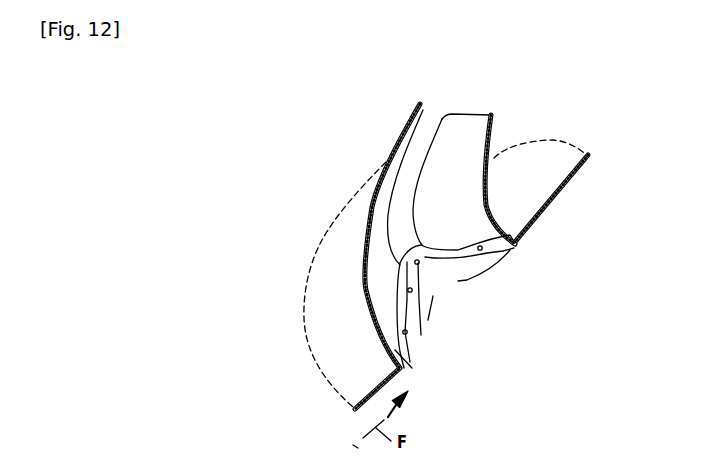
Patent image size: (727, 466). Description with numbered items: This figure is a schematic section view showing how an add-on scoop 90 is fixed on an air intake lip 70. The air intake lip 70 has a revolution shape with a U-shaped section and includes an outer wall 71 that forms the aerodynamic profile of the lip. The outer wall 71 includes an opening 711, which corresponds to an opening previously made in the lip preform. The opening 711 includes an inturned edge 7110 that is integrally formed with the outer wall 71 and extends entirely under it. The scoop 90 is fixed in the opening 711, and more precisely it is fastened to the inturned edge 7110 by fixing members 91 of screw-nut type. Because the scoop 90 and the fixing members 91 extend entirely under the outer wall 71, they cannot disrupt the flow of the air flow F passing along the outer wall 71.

The air intake lip 70 is at (583, 182).
The outer wall 71 is at (547, 212).
The opening 711 is at (479, 313).
The inturned edge 7110 is at (500, 251).
The scoop 90 is at (475, 130).
The fixing members 91 is at (418, 263).